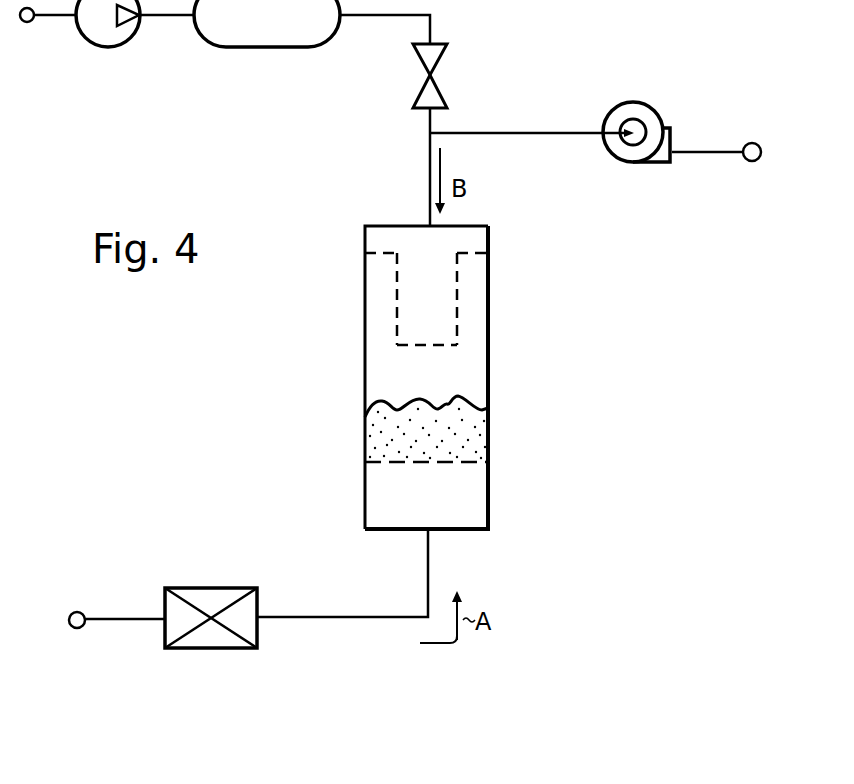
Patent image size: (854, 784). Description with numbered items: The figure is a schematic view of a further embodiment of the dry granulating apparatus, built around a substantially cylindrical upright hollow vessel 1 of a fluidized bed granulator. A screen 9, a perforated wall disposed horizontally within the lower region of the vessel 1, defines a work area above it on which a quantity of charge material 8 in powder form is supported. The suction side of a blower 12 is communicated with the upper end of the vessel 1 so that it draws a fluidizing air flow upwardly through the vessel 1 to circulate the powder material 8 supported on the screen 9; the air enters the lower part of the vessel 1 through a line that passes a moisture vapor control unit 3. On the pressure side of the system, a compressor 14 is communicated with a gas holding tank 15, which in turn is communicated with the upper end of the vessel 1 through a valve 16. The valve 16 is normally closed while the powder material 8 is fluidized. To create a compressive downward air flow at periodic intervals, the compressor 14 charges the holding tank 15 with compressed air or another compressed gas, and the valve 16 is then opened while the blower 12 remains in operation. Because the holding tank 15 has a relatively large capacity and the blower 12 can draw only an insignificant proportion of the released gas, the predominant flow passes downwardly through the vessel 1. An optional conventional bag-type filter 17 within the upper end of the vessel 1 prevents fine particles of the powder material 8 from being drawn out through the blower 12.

The vessel 1 is at (488, 373).
The moisture vapor control unit 3 is at (210, 586).
The charge material 8 is at (475, 440).
The screen 9 is at (440, 464).
The blower 12 is at (658, 110).
The compressor 14 is at (108, 47).
The gas holding tank 15 is at (252, 47).
The valve 16 is at (440, 92).
The bag-type filter 17 is at (457, 312).